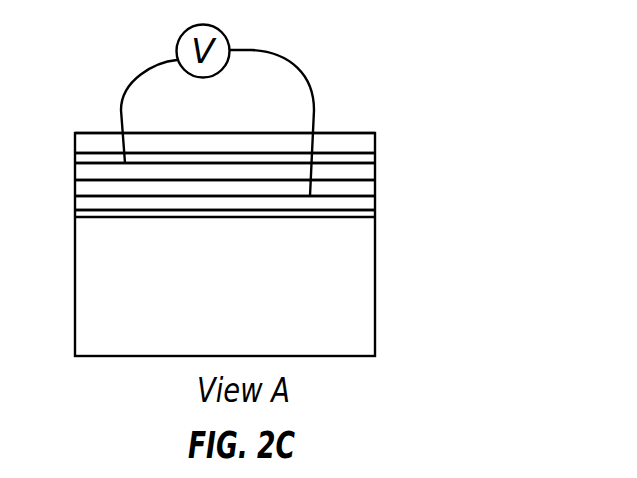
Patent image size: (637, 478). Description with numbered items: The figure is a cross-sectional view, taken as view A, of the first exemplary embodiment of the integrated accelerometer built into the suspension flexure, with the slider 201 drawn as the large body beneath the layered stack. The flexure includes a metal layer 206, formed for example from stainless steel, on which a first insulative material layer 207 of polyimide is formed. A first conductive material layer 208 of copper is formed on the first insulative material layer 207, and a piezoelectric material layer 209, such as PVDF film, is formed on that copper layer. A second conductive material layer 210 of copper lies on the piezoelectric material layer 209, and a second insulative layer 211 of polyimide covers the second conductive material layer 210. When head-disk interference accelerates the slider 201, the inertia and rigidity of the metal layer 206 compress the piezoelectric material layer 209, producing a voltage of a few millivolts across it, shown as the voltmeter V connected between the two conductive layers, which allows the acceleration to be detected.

The slider 201 is at (390, 298).
The metal layer 206 is at (390, 143).
The first insulative material layer 207 is at (390, 161).
The first conductive material layer 208 is at (390, 173).
The piezoelectric material layer 209 is at (390, 188).
The second conductive material layer 210 is at (390, 203).
The second insulative layer 211 is at (390, 212).